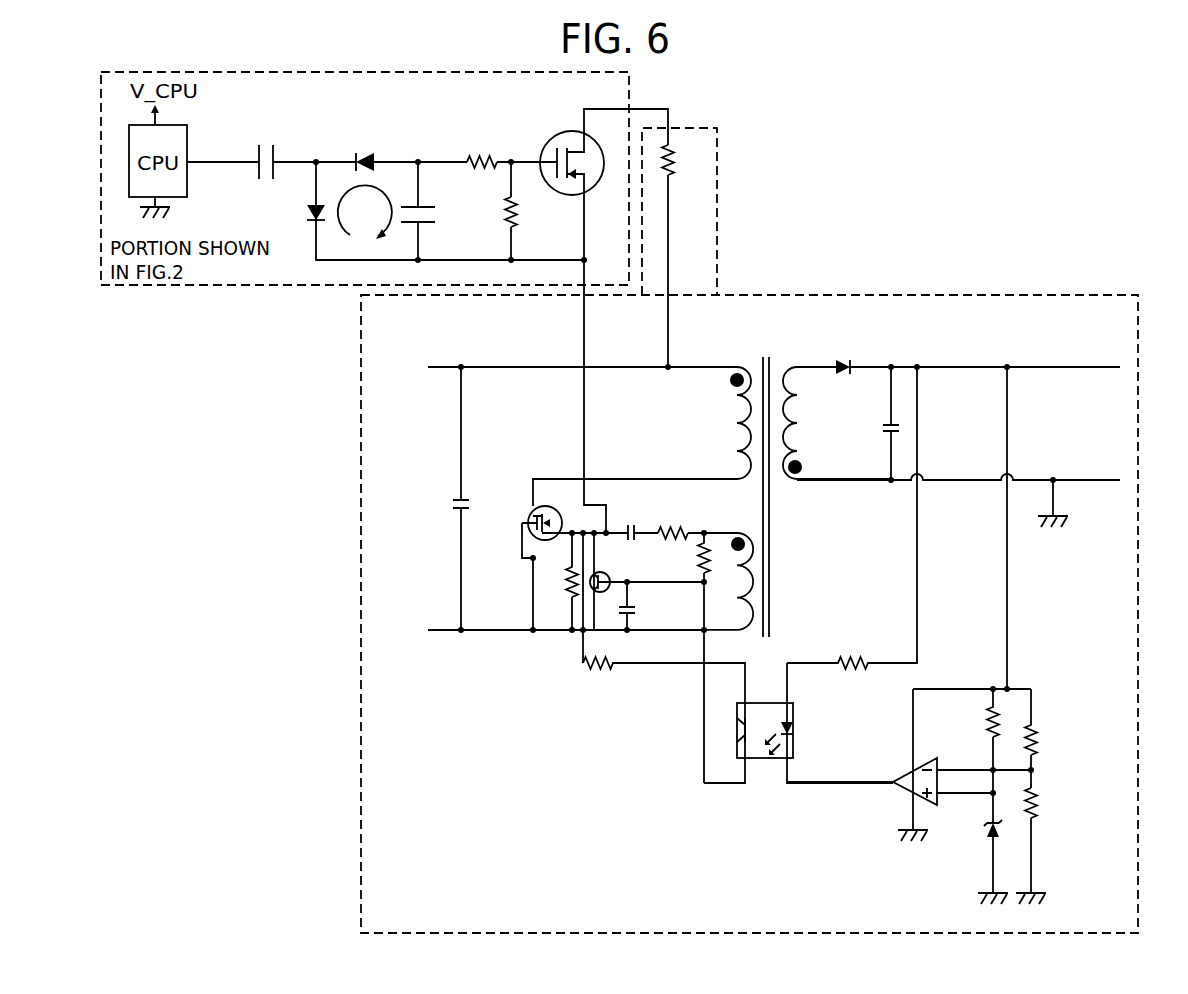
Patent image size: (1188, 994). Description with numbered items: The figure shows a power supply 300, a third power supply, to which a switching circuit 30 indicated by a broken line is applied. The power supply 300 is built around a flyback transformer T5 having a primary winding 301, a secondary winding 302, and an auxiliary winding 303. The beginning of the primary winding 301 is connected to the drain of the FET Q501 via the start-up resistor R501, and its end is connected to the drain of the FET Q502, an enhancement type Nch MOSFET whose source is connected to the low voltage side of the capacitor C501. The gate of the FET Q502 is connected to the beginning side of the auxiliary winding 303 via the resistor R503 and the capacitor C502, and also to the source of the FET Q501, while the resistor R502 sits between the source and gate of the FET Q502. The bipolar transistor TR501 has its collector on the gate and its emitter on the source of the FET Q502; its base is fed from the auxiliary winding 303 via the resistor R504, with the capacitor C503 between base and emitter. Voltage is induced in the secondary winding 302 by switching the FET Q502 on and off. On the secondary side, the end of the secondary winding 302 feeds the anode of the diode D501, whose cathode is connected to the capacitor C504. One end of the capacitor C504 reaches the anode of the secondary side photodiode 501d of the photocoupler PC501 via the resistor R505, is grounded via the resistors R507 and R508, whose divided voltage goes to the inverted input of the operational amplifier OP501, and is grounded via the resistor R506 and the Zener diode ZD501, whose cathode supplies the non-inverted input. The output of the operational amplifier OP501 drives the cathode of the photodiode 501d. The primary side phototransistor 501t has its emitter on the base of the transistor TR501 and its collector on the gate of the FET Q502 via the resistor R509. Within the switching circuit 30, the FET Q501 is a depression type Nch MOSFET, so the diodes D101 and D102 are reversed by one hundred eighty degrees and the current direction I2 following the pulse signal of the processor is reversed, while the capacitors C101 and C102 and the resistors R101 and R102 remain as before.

The switching circuit 30 is at (247, 285).
The power supply 300 is at (932, 302).
The primary winding 301 is at (710, 366).
The secondary winding 302 is at (793, 366).
The auxiliary winding 303 is at (770, 611).
The primary side phototransistor 501t is at (745, 727).
The secondary side photodiode 501d is at (793, 728).
The capacitor C102 is at (263, 150).
The diode D101 is at (366, 146).
The diode D102 is at (287, 216).
The current direction I2 is at (373, 188).
The capacitor C101 is at (437, 198).
The resistor R102 is at (470, 149).
The resistor R101 is at (484, 212).
The FET Q501 is at (583, 311).
The start-up resistor R501 is at (684, 247).
The transformer T5 is at (774, 479).
The diode D501 is at (851, 355).
The capacitor C504 is at (864, 423).
The capacitor C501 is at (438, 498).
The FET Q502 is at (541, 563).
The resistor R502 is at (545, 581).
The bipolar transistor TR501 is at (621, 568).
The capacitor C502 is at (636, 520).
The resistor R503 is at (692, 520).
The resistor R504 is at (683, 658).
The capacitor C503 is at (661, 606).
The resistor R509 is at (662, 720).
The photocoupler PC501 is at (748, 760).
The resistor R505 is at (852, 575).
The operational amplifier OP501 is at (909, 771).
The resistor R506 is at (965, 741).
The resistor R507 is at (1058, 738).
The resistor R508 is at (1062, 838).
The Zener diode ZD501 is at (962, 843).